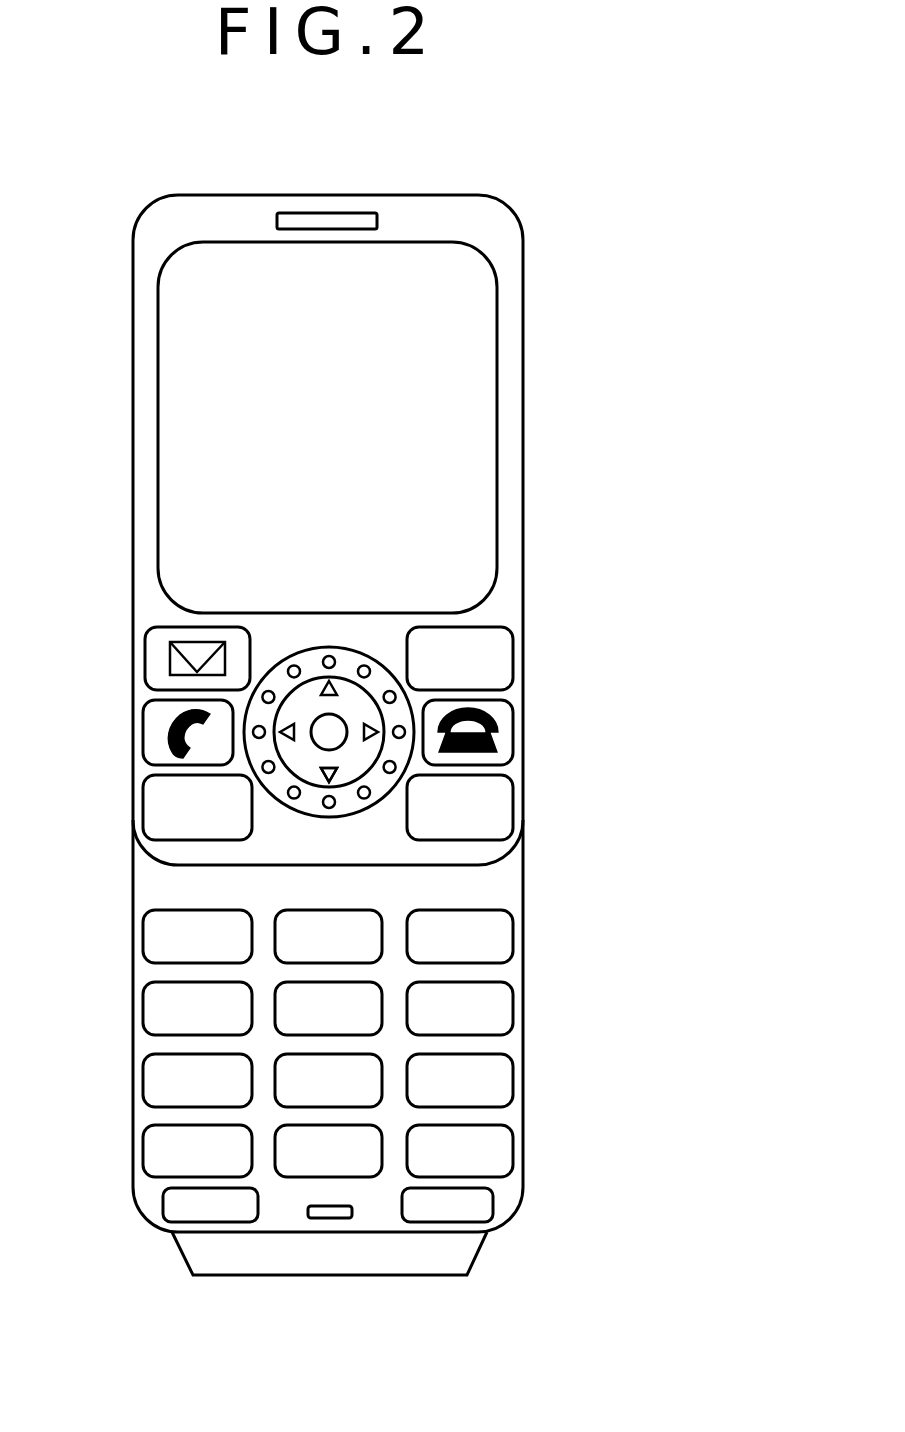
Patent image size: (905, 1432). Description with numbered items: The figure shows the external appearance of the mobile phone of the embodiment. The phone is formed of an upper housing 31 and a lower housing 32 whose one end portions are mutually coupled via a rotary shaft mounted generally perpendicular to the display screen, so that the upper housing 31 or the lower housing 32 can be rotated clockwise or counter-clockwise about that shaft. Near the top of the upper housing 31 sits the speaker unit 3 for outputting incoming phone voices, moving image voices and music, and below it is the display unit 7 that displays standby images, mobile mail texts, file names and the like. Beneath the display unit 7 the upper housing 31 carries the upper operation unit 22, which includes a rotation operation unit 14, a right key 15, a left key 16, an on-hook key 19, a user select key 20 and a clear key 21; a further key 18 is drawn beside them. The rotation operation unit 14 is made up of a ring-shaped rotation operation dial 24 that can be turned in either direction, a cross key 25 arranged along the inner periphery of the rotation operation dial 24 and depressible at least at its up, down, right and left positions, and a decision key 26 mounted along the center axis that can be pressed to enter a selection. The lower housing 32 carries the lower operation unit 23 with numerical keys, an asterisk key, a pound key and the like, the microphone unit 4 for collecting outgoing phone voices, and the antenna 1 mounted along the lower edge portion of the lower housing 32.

The antenna 1 is at (480, 1253).
The speaker unit 3 is at (344, 211).
The microphone unit 4 is at (338, 1222).
The display unit 7 is at (497, 305).
The rotation operation unit 14 is at (361, 643).
The right key 15 is at (513, 652).
The left key 16 is at (144, 655).
The end call key 18 is at (513, 733).
The on-hook key 19 is at (144, 722).
The user select key 20 is at (514, 805).
The clear key 21 is at (142, 808).
The upper operation unit 22 is at (297, 844).
The lower operation unit 23 is at (288, 1200).
The rotation operation dial 24 is at (306, 660).
The cross key 25 is at (350, 772).
The decision key 26 is at (320, 733).
The upper housing 31 is at (130, 305).
The lower housing 32 is at (130, 1010).